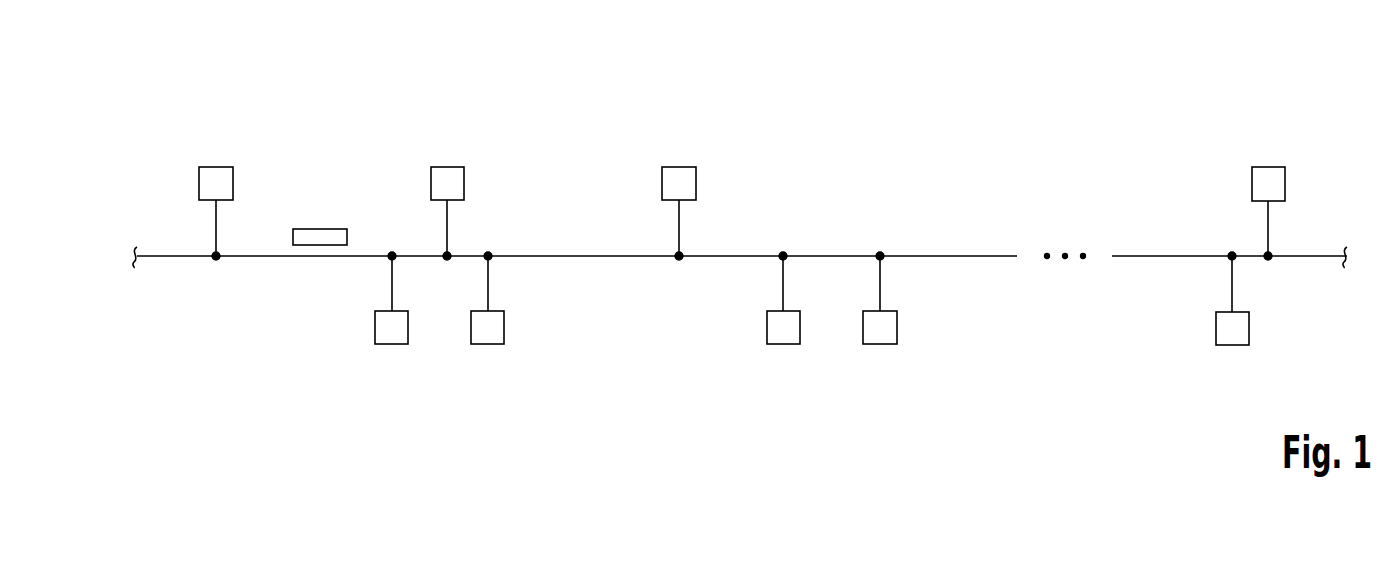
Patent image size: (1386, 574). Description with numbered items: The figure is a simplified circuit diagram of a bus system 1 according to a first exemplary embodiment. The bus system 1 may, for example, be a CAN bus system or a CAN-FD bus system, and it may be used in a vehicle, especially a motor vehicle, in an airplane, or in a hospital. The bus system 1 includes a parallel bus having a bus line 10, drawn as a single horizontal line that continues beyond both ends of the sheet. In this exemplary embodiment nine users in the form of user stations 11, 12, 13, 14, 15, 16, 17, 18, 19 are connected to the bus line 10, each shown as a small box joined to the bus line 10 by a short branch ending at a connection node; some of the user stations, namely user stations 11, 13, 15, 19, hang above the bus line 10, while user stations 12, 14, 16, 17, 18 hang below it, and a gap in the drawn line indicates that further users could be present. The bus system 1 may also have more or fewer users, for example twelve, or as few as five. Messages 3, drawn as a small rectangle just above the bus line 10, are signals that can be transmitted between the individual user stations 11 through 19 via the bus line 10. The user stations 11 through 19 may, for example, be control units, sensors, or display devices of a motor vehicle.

The bus system 1 is at (1312, 125).
The messages 3 is at (321, 228).
The bus line 10 is at (173, 258).
The user station 11 is at (216, 166).
The user station 12 is at (392, 345).
The user station 13 is at (447, 166).
The user station 14 is at (488, 345).
The user station 15 is at (679, 166).
The user station 16 is at (783, 345).
The user station 17 is at (880, 345).
The user station 18 is at (1232, 345).
The user station 19 is at (1269, 166).